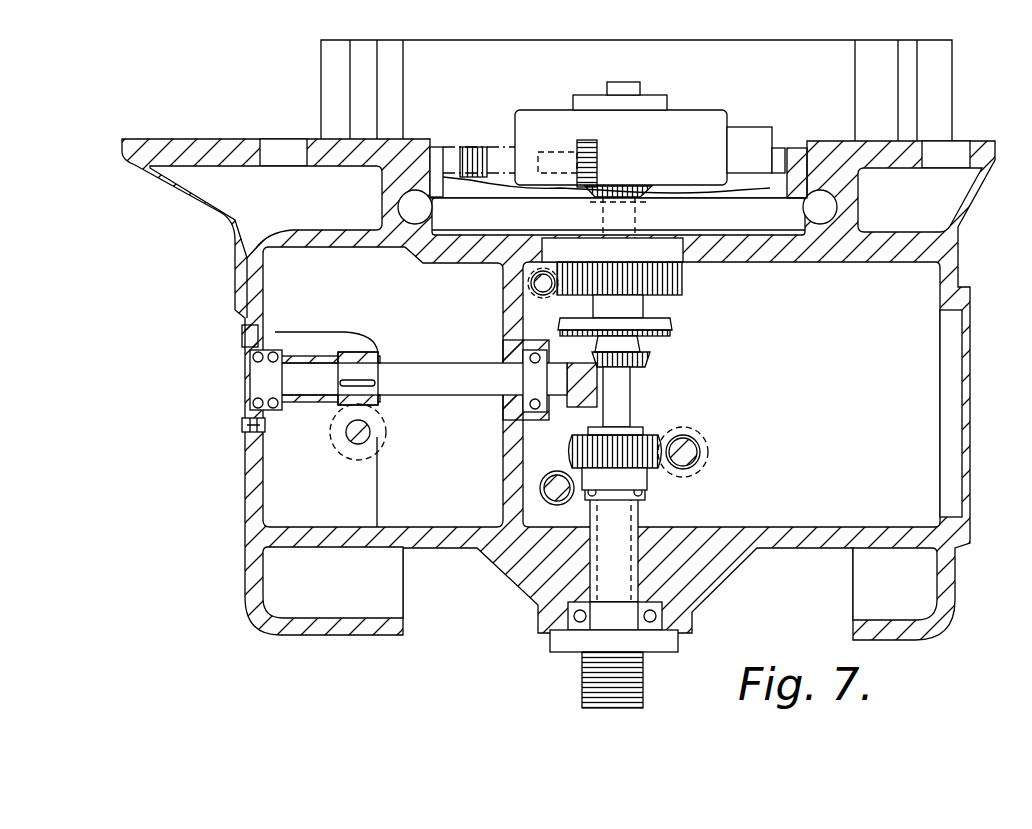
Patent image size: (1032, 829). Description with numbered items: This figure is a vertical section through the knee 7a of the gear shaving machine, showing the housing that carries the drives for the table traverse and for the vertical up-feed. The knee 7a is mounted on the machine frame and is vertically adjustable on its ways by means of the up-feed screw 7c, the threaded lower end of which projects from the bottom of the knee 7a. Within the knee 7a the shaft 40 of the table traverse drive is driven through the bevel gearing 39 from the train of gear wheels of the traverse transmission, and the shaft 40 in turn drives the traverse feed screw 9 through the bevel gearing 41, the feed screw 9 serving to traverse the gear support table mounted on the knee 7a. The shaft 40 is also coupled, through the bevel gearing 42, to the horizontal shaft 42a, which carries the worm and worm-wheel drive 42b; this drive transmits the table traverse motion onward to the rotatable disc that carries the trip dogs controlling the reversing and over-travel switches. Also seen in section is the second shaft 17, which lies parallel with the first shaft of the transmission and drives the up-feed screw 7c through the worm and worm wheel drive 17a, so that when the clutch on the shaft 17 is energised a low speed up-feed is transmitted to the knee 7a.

The knee 7a is at (255, 543).
The up-feed screw 7c is at (581, 684).
The feed screw 9 is at (470, 147).
The bevel gearing 41 is at (593, 162).
The shaft 40 is at (687, 270).
The bevel gearing 39 is at (667, 325).
The bevel gearing 42 is at (600, 402).
The shaft 42a is at (438, 382).
The worm and worm-wheel drive 42b is at (378, 403).
The worm and worm wheel drive 17a is at (648, 433).
The second shaft 17 is at (698, 452).